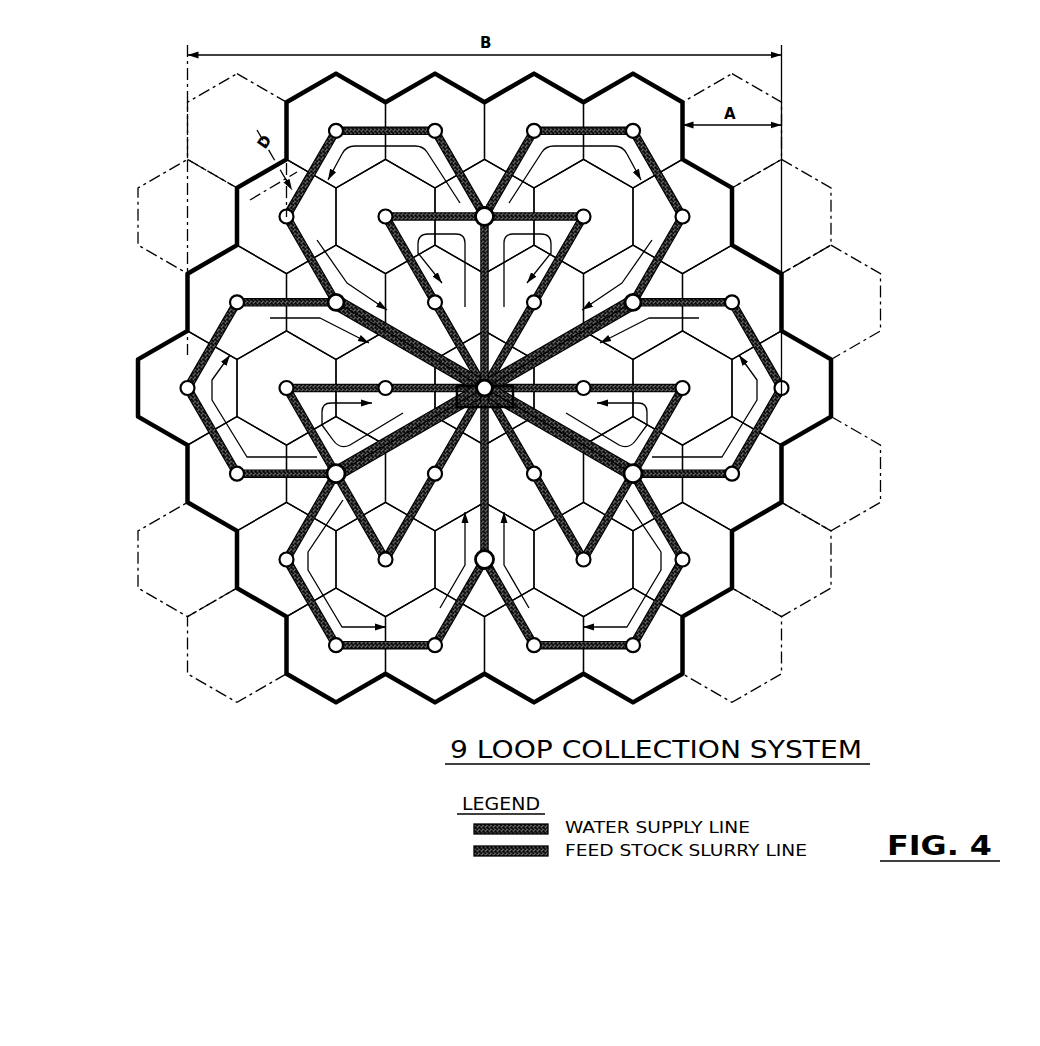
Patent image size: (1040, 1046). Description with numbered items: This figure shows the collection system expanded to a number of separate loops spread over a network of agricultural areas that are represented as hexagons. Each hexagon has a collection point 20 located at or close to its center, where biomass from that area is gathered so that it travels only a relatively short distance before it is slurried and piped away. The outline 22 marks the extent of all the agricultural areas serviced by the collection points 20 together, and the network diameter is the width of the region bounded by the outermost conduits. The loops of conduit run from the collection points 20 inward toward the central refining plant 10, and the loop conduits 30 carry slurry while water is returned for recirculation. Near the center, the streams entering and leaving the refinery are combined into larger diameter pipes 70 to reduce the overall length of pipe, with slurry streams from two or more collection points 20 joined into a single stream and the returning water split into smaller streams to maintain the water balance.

The central collection node 10 is at (517, 397).
The collection points 20 is at (584, 211).
The outline 22 is at (835, 388).
The collection loop pipeline 30 is at (681, 408).
The larger diameter pipes 70 is at (490, 295).